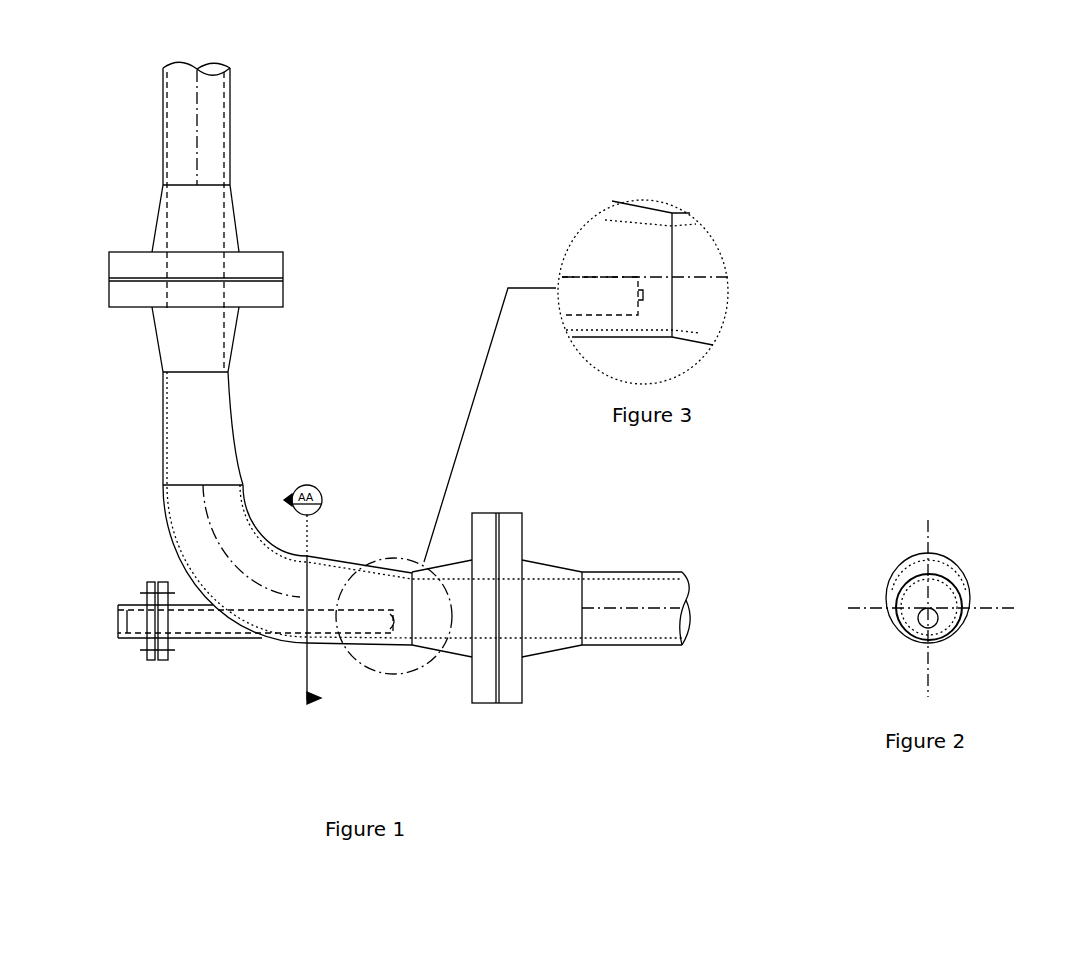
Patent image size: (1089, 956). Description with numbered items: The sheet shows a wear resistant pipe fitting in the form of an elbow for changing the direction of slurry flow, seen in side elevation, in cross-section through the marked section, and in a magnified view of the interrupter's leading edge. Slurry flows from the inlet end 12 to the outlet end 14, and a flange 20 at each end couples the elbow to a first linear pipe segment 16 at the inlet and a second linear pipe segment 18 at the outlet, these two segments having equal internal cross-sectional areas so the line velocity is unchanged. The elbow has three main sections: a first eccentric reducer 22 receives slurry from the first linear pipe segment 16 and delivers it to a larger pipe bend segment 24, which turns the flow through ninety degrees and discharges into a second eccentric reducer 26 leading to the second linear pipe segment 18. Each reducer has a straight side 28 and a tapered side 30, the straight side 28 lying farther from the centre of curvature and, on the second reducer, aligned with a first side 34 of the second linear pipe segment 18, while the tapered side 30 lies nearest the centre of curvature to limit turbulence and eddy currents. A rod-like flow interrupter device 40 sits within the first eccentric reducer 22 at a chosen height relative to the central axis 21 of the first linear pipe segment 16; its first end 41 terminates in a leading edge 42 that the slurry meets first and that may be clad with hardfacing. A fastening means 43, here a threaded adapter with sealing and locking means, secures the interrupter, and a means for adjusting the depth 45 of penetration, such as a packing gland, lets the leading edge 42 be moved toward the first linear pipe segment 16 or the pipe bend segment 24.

In FIG. 1, the inlet end 12 is at (690, 578).
In FIG. 1, the outlet end 14 is at (218, 66).
In FIG. 1, the first linear pipe segment 16 is at (628, 648).
In FIG. 2, the first linear pipe segment 16 is at (955, 582).
In FIG. 1, the second linear pipe segment 18 is at (233, 125).
In FIG. 1, the flange 20 is at (262, 252).
In FIG. 1, the central axis 21 is at (601, 606).
In FIG. 2, the central axis 21 is at (975, 610).
In FIG. 1, the first eccentric reducer 22 is at (345, 565).
In FIG. 2, the first eccentric reducer 22 is at (945, 555).
In FIG. 1, the pipe bend segment 24 is at (166, 525).
In FIG. 1, the second eccentric reducer 26 is at (238, 404).
In FIG. 1, the straight side 28 is at (166, 430).
In FIG. 3, the straight side 28 is at (600, 338).
In FIG. 1, the tapered side 30 is at (244, 447).
In FIG. 3, the tapered side 30 is at (637, 204).
In FIG. 1, the first side of the second linear pipe segment 34 is at (162, 126).
In FIG. 1, the flow interrupter device 40 is at (320, 636).
In FIG. 3, the flow interrupter device 40 is at (597, 298).
In FIG. 2, the flow interrupter device 40 is at (922, 625).
In FIG. 3, the first end 41 is at (635, 278).
In FIG. 3, the leading edge 42 is at (645, 305).
In FIG. 1, the fastening means 43 is at (165, 662).
In FIG. 1, the means for adjusting the depth 45 is at (150, 661).